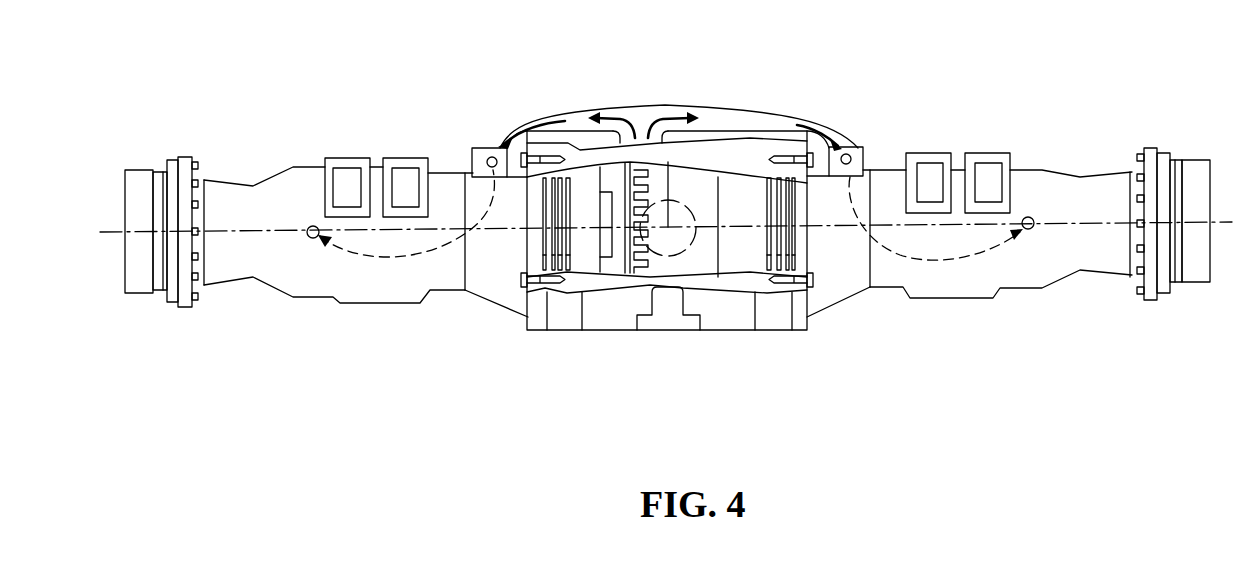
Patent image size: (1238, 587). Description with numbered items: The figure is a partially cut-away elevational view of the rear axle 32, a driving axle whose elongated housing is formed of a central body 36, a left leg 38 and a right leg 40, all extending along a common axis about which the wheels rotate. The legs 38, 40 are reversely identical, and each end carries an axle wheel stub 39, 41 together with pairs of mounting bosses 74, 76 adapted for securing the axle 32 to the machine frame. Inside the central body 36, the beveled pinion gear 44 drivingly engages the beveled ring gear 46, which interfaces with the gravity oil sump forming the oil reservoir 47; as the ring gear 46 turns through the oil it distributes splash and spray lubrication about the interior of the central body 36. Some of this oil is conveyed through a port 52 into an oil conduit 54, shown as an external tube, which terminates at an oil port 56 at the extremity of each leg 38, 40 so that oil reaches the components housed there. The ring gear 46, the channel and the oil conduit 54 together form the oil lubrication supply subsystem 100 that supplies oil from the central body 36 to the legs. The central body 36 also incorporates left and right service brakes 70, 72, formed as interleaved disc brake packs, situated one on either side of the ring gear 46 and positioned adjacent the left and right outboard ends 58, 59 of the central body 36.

The oil lubrication supply subsystem 100 is at (574, 67).
The rear axle 32 is at (727, 277).
The central body 36 is at (722, 330).
The left leg 38 is at (1048, 263).
The axle wheel stub 39 is at (1148, 307).
The right leg 40 is at (240, 262).
The axle wheel stub 41 is at (167, 152).
The pinion gear 44 is at (690, 205).
The ring gear 46 is at (620, 200).
The oil reservoir 47 is at (627, 282).
The port 52 is at (489, 157).
The oil conduit 54 is at (382, 257).
The oil port 56 is at (311, 226).
The left outboard end 58 is at (808, 321).
The right outboard end 59 is at (527, 320).
The left service brake 70 is at (790, 232).
The right service brake 72 is at (538, 232).
The mounting bosses 74 is at (928, 158).
The mounting bosses 76 is at (405, 160).